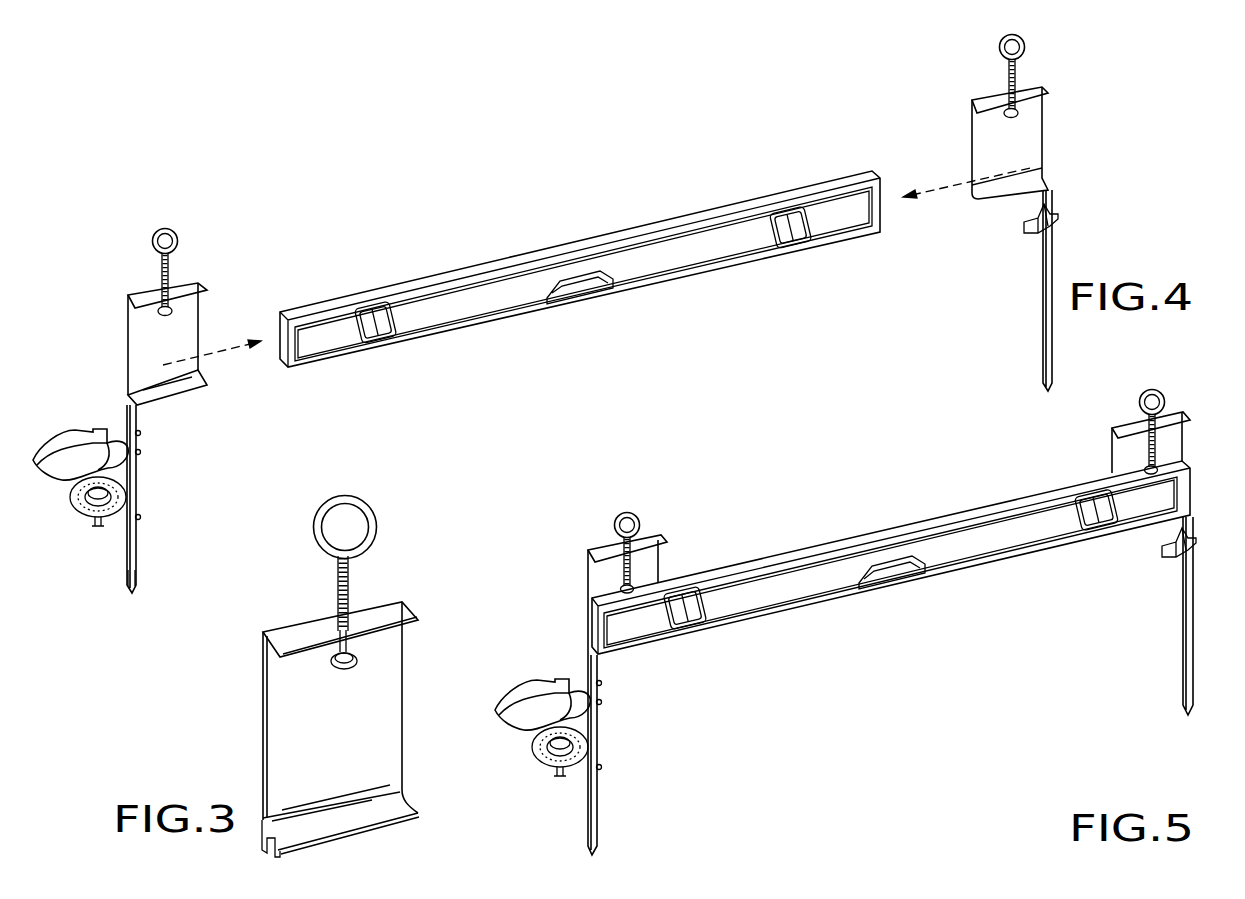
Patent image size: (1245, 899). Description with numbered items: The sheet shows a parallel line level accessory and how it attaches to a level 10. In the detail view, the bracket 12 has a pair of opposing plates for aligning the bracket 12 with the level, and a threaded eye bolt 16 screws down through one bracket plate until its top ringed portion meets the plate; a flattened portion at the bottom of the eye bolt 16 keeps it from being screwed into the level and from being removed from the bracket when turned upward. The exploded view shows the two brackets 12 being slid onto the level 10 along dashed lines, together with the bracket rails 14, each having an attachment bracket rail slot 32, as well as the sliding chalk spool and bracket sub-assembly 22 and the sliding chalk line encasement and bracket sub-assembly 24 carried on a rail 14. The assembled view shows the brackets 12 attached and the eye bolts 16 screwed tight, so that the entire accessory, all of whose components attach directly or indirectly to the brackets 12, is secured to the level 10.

In FIG. 4, the level 10 is at (595, 240).
In FIG. 5, the level 10 is at (958, 519).
In FIG. 4, the bracket 12 is at (135, 334).
In FIG. 3, the bracket 12 is at (293, 642).
In FIG. 5, the bracket 12 is at (647, 567).
In FIG. 4, the bracket rail 14 is at (135, 575).
In FIG. 5, the bracket rail 14 is at (600, 803).
In FIG. 4, the threaded eye bolt 16 is at (163, 229).
In FIG. 3, the threaded eye bolt 16 is at (357, 548).
In FIG. 5, the threaded eye bolt 16 is at (632, 514).
In FIG. 4, the sliding chalk spool and bracket sub-assembly 22 is at (86, 526).
In FIG. 5, the sliding chalk spool and bracket sub-assembly 22 is at (553, 791).
In FIG. 4, the sliding chalk line encasement and bracket sub-assembly 24 is at (70, 426).
In FIG. 5, the sliding chalk line encasement and bracket sub-assembly 24 is at (512, 677).
In FIG. 4, the attachment bracket rail slot 32 is at (127, 567).